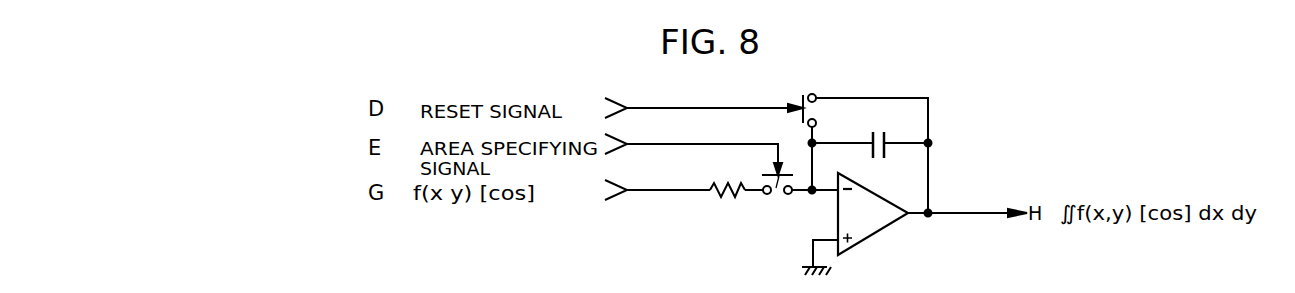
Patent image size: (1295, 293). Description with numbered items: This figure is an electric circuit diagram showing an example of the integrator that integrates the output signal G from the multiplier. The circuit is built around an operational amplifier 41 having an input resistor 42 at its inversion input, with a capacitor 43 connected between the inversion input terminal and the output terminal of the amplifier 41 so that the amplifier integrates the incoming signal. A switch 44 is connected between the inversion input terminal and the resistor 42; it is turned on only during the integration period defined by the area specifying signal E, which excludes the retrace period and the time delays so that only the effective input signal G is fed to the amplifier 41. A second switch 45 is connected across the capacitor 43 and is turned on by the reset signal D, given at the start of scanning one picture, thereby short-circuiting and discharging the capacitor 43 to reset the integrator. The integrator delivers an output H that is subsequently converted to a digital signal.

The operational amplifier 41 is at (882, 233).
The input resistor 42 is at (735, 199).
The capacitor 43 is at (885, 132).
The switch 44 is at (777, 192).
The switch 45 is at (806, 93).